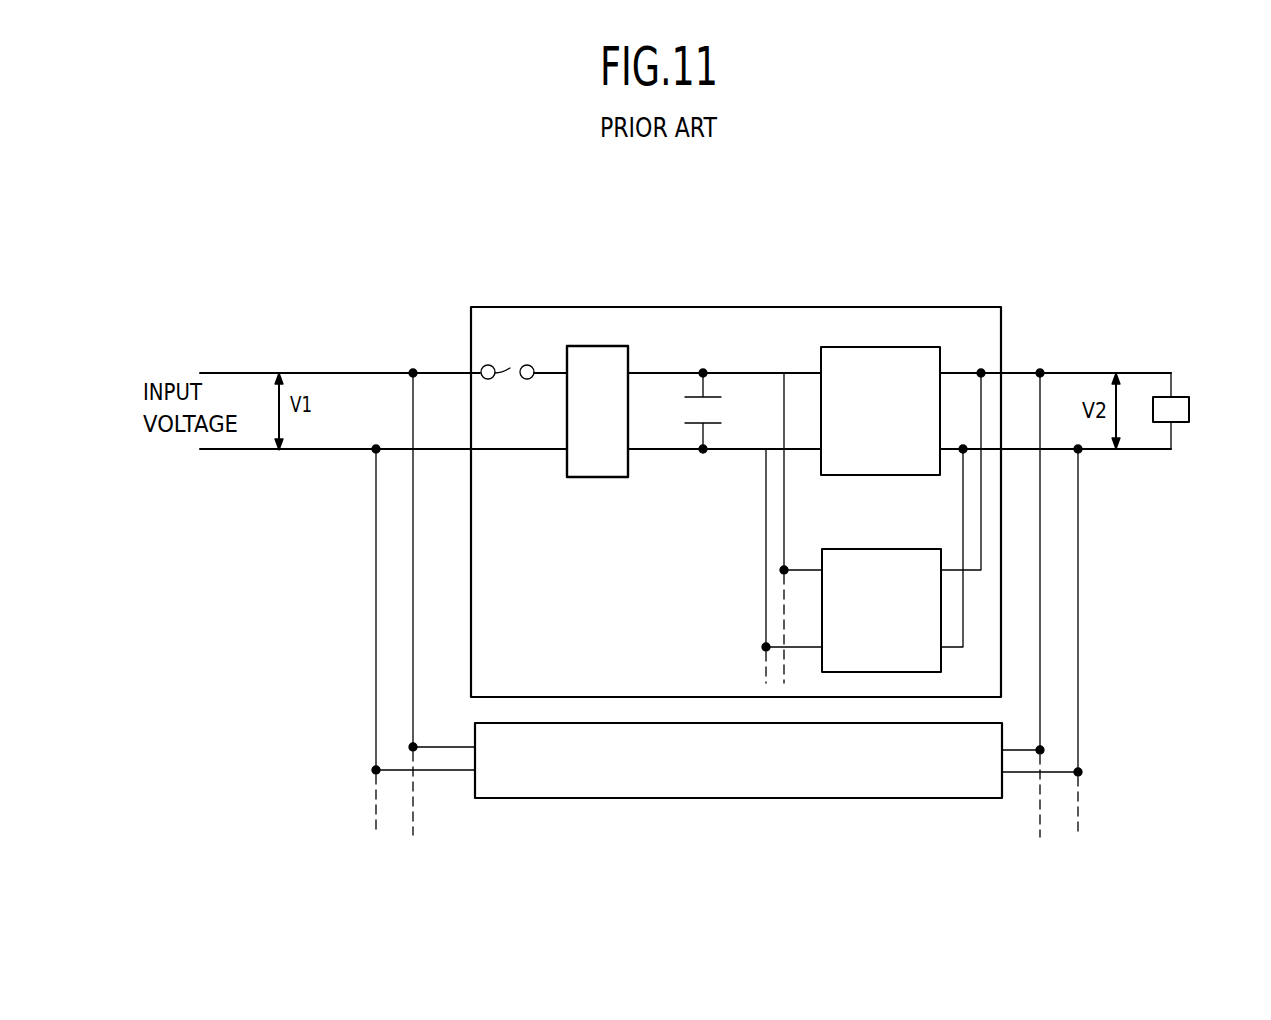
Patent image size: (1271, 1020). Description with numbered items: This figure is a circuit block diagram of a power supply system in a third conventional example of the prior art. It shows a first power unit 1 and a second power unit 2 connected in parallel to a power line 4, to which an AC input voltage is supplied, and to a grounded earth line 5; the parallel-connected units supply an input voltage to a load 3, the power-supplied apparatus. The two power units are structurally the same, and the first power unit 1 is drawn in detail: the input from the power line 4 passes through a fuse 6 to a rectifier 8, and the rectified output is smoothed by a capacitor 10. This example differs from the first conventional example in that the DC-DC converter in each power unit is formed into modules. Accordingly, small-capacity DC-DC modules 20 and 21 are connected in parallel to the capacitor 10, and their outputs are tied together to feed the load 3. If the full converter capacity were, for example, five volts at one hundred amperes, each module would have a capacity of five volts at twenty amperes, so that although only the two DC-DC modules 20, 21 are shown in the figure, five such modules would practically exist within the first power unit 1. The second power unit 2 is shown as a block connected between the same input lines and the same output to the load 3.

The first power unit 1 is at (527, 307).
The second power unit 2 is at (663, 798).
The load 3 is at (1189, 416).
The power line 4 is at (318, 373).
The earth line 5 is at (312, 449).
The fuse 6 is at (511, 368).
The rectifier 8 is at (588, 525).
The capacitor 10 is at (707, 403).
The DC-DC module 20 is at (927, 347).
The DC-DC module 21 is at (908, 549).